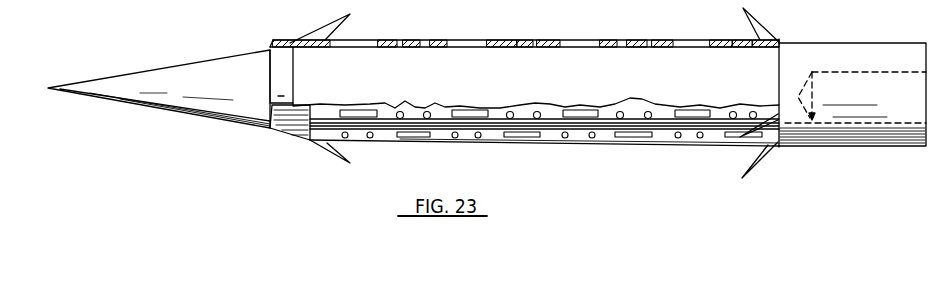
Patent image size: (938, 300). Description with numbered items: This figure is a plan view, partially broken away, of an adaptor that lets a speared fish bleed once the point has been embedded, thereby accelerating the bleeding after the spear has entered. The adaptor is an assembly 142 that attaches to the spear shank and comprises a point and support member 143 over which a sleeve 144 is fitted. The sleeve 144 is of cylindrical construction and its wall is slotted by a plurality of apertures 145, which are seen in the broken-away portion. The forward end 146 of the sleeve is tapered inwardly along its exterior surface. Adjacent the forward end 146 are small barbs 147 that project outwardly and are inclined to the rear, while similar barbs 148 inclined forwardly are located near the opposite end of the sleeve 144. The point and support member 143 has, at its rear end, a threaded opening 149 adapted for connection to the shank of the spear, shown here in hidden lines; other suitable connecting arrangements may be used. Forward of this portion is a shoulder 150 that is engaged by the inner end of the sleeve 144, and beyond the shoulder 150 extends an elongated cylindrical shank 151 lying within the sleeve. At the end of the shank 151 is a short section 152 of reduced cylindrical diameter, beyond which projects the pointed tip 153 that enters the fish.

The assembly 142 is at (692, 150).
The point and support member 143 is at (198, 120).
The sleeve 144 is at (602, 150).
The apertures 145 is at (473, 43).
The forward end 146 is at (292, 42).
The barbs 147 is at (325, 144).
The barbs 148 is at (760, 152).
The threaded opening 149 is at (855, 122).
The shoulder 150 is at (780, 72).
The cylindrical shank 151 is at (577, 60).
The short section 152 is at (280, 72).
The pointed tip 153 is at (168, 78).